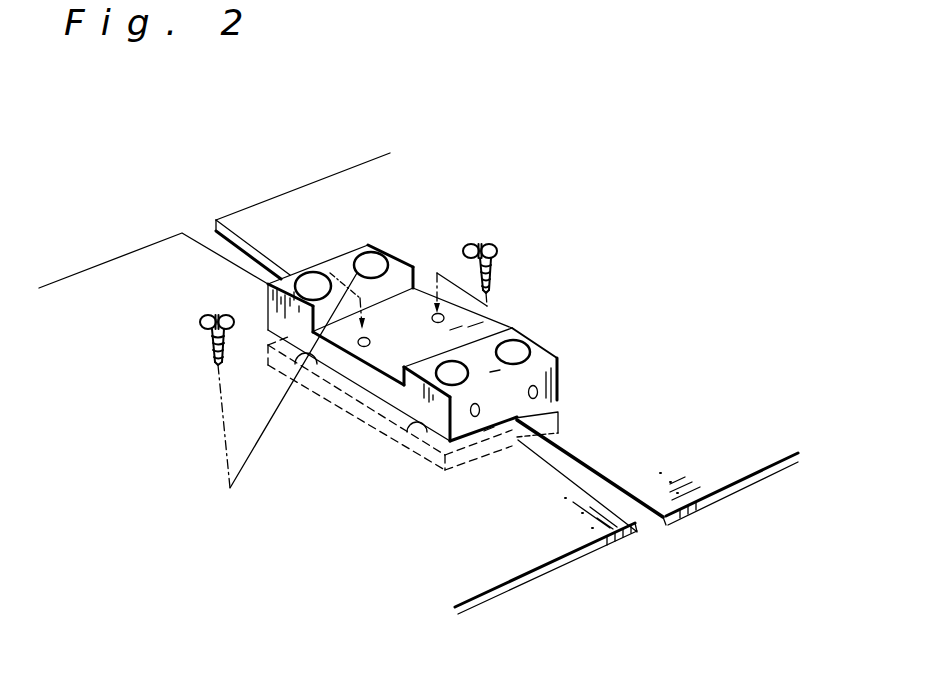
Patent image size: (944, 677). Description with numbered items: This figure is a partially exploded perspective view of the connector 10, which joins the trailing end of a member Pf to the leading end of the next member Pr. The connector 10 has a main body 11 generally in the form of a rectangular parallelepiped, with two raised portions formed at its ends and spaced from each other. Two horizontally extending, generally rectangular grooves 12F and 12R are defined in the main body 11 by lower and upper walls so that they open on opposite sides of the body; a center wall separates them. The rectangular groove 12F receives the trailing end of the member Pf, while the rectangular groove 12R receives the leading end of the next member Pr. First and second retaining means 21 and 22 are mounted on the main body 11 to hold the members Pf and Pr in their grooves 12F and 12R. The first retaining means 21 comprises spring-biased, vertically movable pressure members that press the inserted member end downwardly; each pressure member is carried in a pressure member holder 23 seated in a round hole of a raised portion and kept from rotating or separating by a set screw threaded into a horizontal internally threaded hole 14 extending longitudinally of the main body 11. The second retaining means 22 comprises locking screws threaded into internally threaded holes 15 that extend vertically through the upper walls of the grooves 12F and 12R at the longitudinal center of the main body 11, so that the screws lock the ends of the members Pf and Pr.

The connector 10 is at (480, 345).
The main body 11 is at (558, 372).
The rectangular groove 12F is at (488, 437).
The rectangular groove 12R is at (562, 420).
The internally threaded hole 14 is at (532, 396).
The internally threaded holes 15 is at (436, 323).
The first retaining means 21 is at (320, 348).
The locking screw 22 is at (498, 251).
The pressure member holder 23 is at (312, 282).
The next member Pr is at (700, 467).
The member Pf is at (520, 562).